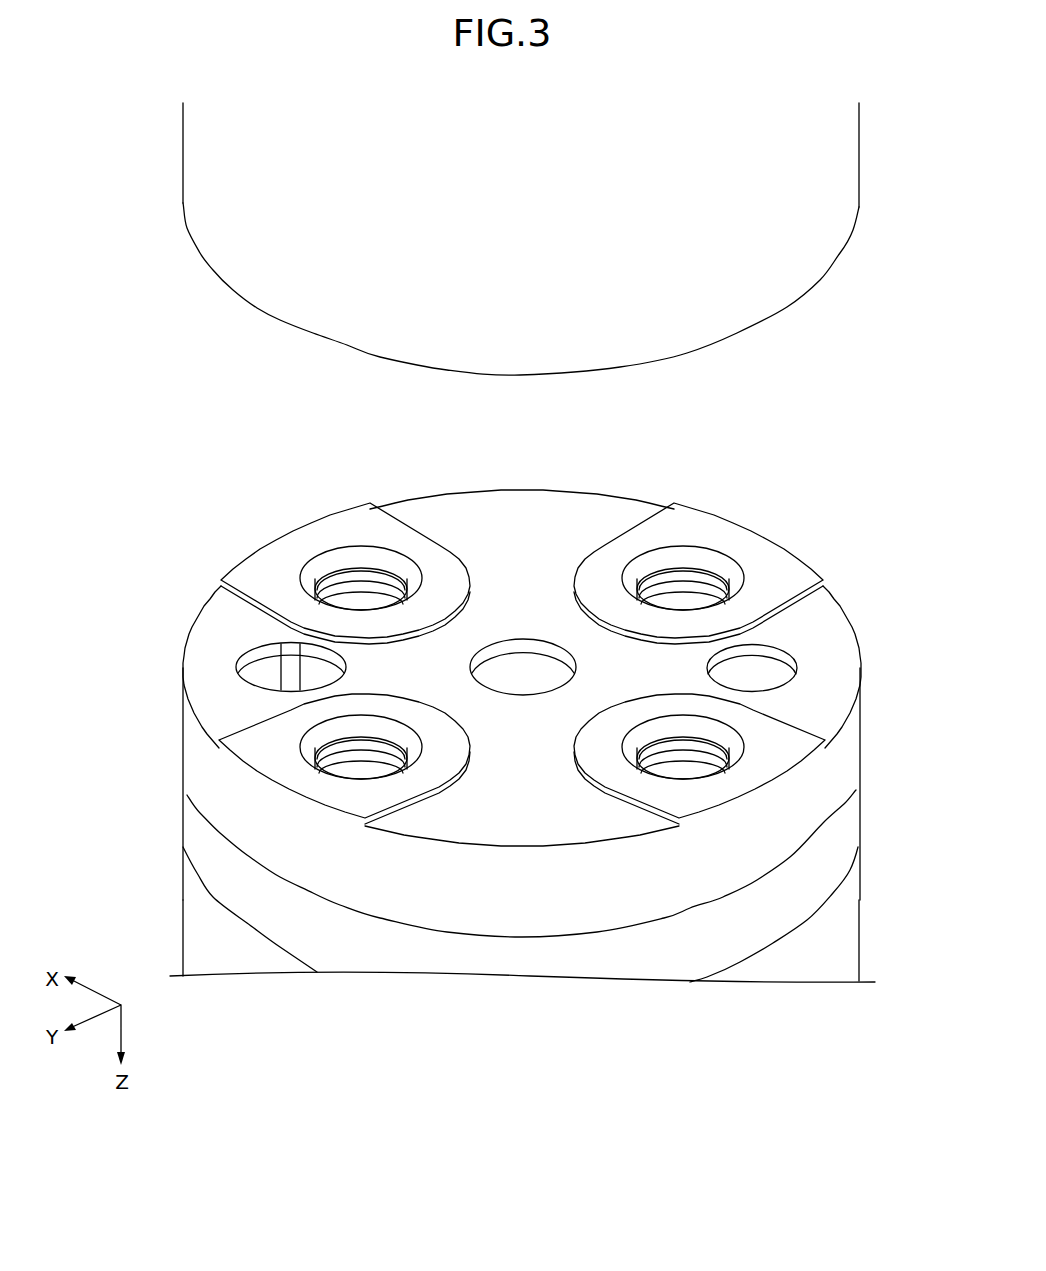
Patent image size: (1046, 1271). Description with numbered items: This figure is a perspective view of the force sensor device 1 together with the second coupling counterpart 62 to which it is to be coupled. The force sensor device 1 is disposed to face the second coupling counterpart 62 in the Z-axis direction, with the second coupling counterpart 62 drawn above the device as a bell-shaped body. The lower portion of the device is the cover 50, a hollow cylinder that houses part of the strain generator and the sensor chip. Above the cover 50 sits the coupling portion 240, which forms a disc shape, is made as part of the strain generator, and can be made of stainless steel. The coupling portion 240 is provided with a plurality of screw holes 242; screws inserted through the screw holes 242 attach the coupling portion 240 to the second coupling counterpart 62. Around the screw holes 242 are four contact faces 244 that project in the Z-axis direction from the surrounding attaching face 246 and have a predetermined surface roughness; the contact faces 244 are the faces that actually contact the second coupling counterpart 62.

The force sensor device 1 is at (140, 547).
The cover 50 is at (832, 927).
The second coupling counterpart 62 is at (828, 166).
The coupling portion 240 is at (535, 880).
The screw holes 242 is at (336, 587).
The contact faces 244 is at (262, 585).
The attaching face 246 is at (602, 515).